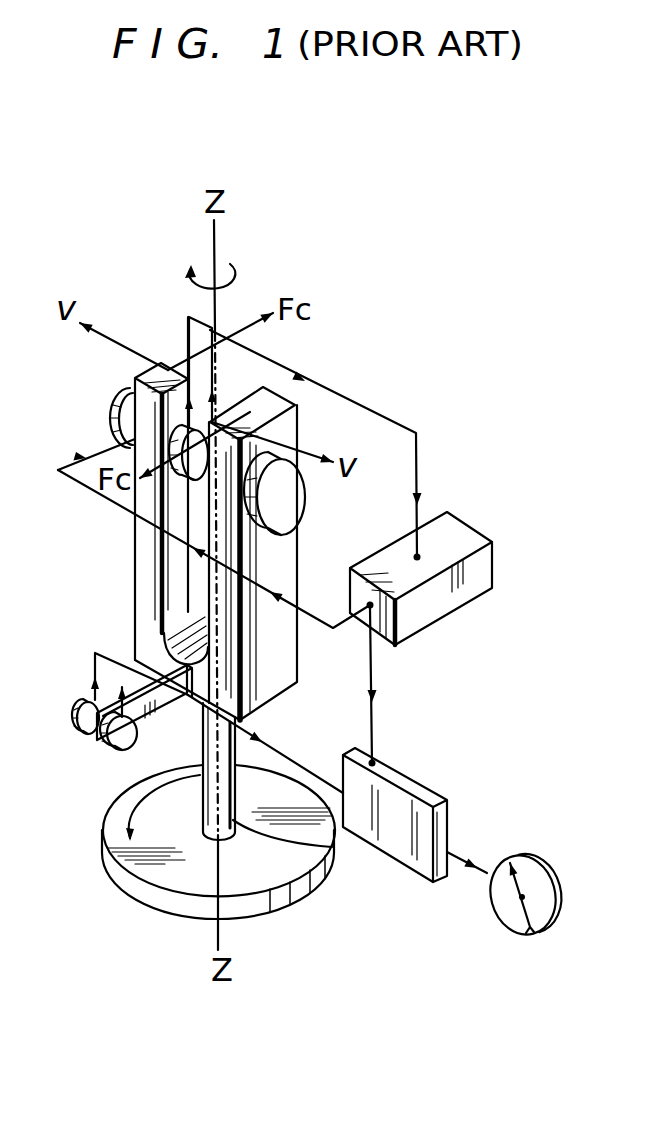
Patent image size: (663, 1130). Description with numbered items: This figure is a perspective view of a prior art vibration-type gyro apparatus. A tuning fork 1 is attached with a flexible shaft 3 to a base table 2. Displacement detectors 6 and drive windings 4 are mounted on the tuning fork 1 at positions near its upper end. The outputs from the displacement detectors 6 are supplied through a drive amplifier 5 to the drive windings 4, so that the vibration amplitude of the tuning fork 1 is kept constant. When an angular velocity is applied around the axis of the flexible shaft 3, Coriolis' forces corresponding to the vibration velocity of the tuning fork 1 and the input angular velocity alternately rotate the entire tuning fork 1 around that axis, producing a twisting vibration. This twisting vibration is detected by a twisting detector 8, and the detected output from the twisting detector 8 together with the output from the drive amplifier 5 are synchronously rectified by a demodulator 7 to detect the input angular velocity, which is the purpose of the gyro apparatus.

The tuning fork 1 is at (143, 593).
The base table 2 is at (178, 877).
The flexible shaft 3 is at (332, 847).
The drive windings 4 is at (117, 405).
The drive amplifier 5 is at (492, 548).
The displacement detectors 6 is at (185, 473).
The demodulator 7 is at (423, 794).
The twisting detector 8 is at (118, 745).